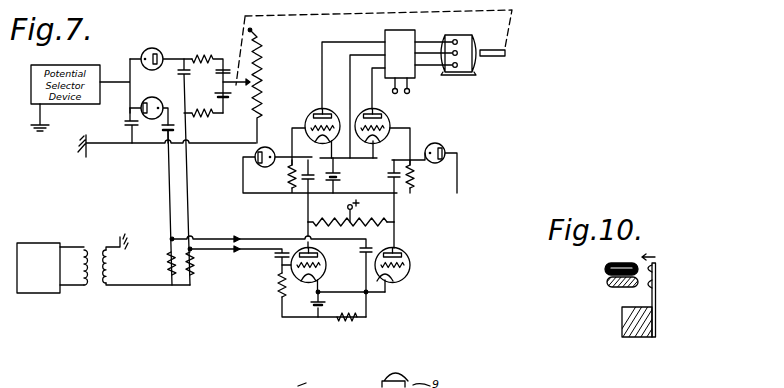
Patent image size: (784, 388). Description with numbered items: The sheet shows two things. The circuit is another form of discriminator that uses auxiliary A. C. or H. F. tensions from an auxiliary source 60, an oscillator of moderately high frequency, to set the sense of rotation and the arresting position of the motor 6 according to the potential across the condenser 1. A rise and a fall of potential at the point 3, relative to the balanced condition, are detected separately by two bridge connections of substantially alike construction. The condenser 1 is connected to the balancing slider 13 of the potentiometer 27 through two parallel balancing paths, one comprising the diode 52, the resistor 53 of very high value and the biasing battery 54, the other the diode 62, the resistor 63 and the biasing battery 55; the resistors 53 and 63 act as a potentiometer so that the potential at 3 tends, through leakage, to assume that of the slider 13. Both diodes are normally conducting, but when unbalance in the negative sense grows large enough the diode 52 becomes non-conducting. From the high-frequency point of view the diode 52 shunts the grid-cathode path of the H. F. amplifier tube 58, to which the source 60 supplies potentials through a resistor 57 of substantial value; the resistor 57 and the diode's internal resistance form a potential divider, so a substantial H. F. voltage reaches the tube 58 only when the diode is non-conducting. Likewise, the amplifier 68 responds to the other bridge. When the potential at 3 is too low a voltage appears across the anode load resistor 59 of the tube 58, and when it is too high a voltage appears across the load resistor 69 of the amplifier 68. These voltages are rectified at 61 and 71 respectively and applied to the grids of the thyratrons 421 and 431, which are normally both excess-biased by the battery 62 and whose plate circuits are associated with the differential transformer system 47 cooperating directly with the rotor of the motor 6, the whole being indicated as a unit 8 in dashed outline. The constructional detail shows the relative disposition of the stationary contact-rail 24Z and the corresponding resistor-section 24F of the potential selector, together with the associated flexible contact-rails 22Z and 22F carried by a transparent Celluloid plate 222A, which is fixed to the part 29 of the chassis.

In FIG. 7, the condenser 1 is at (128, 118).
In FIG. 7, the potential point 3 is at (113, 80).
In FIG. 7, the motor 6 is at (475, 63).
In FIG. 7, the unit enclosure 8 is at (541, 12).
In FIG. 7, the balancing slider 13 is at (235, 98).
In FIG. 7, the potentiometer 27 is at (261, 66).
In FIG. 7, the differential transformer system 47 is at (387, 94).
In FIG. 7, the diode 52 is at (148, 97).
In FIG. 7, the resistor 53 is at (198, 117).
In FIG. 7, the biasing battery 54 is at (211, 96).
In FIG. 7, the biasing battery 55 is at (214, 74).
In FIG. 7, the resistor 57 is at (166, 253).
In FIG. 7, the H. F. amplifier tube 58 is at (410, 264).
In FIG. 7, the anode load resistor 59 is at (394, 221).
In FIG. 7, the auxiliary source 60 is at (47, 243).
In FIG. 7, the rectifier 61 is at (441, 144).
In FIG. 7, the diode / battery 62 is at (160, 50).
In FIG. 7, the resistor 63 is at (197, 52).
In FIG. 7, the amplifier 68 is at (326, 260).
In FIG. 7, the load resistor 69 is at (306, 221).
In FIG. 7, the rectifier 71 is at (265, 168).
In FIG. 7, the thyratron 421 is at (389, 113).
In FIG. 7, the thyratron 431 is at (312, 111).
In FIG. 10, the resistor-section 24F is at (605, 265).
In FIG. 10, the stationary contact-rail 24Z is at (608, 283).
In FIG. 10, the flexible contact-rail 22F is at (657, 268).
In FIG. 10, the flexible contact-rail 22Z is at (657, 293).
In FIG. 10, the transparent Celluloid plate 222A is at (655, 303).
In FIG. 10, the chassis part 29 is at (625, 327).